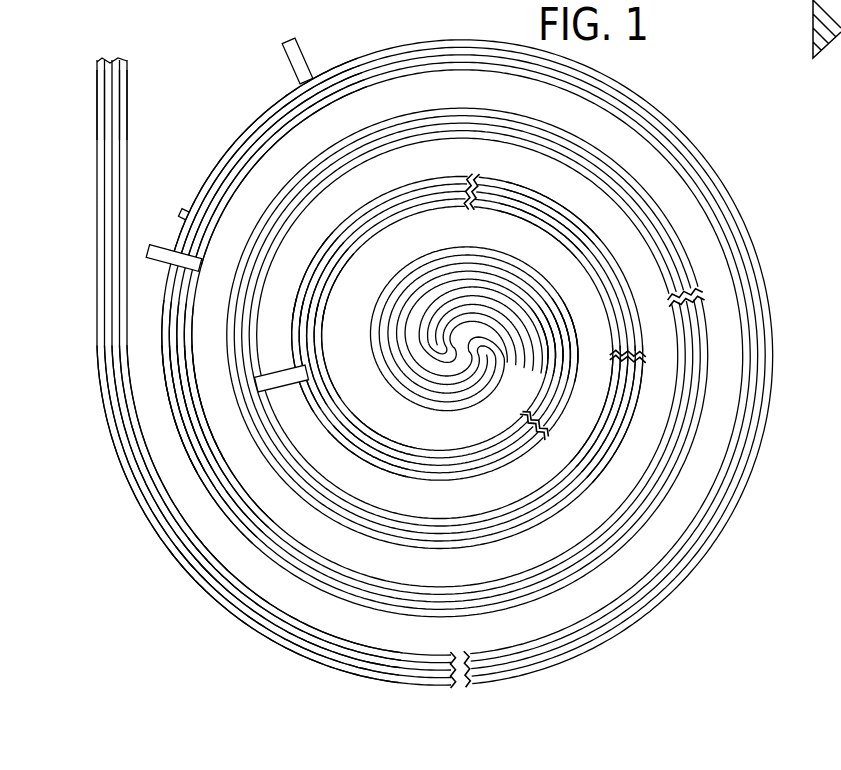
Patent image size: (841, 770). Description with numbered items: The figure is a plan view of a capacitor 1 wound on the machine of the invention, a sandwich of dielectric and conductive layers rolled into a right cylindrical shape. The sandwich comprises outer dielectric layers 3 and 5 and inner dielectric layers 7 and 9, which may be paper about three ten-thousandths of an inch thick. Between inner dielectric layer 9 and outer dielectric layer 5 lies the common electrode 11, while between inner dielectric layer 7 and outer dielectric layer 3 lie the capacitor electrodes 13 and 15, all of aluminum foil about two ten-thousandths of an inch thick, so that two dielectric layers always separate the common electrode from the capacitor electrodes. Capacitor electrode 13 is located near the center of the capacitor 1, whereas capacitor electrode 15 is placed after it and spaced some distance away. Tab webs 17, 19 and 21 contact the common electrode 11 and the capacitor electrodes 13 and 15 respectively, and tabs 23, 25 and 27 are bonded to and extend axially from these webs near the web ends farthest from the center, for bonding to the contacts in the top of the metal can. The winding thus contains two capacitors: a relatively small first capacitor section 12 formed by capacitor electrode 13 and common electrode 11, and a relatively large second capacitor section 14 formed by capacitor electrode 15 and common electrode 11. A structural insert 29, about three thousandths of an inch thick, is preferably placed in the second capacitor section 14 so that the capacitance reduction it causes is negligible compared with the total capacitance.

The capacitor 1 is at (728, 156).
The outer dielectric layer 3 is at (98, 86).
The outer dielectric layer 5 is at (127, 89).
The inner dielectric layer 7 is at (107, 110).
The inner dielectric layer 9 is at (117, 124).
The common electrode 11 is at (150, 443).
The first capacitor section 12 is at (357, 458).
The capacitor electrode 13 is at (312, 270).
The second capacitor section 14 is at (160, 364).
The capacitor electrode 15 is at (551, 207).
The tab web 17 is at (210, 437).
The tab web 19 is at (302, 342).
The tab web 21 is at (256, 117).
The tab 23 is at (163, 247).
The tab 25 is at (296, 380).
The tab 27 is at (307, 54).
The structural insert 29 is at (621, 423).